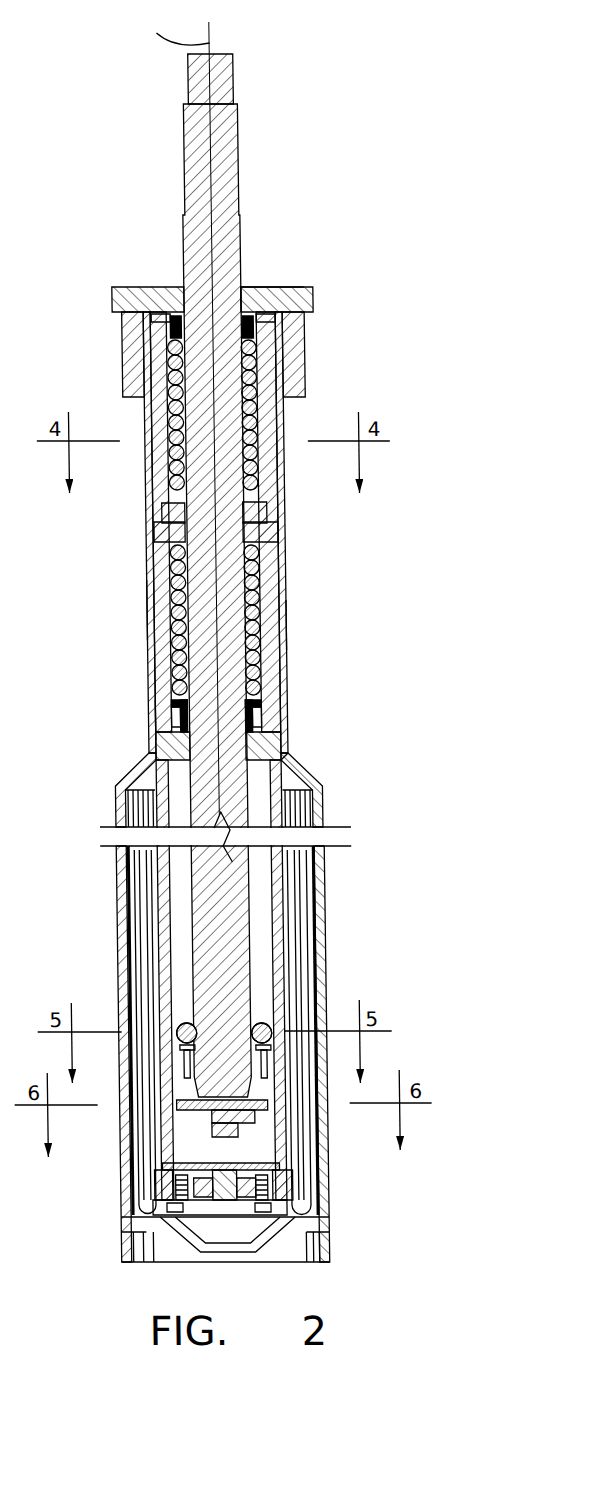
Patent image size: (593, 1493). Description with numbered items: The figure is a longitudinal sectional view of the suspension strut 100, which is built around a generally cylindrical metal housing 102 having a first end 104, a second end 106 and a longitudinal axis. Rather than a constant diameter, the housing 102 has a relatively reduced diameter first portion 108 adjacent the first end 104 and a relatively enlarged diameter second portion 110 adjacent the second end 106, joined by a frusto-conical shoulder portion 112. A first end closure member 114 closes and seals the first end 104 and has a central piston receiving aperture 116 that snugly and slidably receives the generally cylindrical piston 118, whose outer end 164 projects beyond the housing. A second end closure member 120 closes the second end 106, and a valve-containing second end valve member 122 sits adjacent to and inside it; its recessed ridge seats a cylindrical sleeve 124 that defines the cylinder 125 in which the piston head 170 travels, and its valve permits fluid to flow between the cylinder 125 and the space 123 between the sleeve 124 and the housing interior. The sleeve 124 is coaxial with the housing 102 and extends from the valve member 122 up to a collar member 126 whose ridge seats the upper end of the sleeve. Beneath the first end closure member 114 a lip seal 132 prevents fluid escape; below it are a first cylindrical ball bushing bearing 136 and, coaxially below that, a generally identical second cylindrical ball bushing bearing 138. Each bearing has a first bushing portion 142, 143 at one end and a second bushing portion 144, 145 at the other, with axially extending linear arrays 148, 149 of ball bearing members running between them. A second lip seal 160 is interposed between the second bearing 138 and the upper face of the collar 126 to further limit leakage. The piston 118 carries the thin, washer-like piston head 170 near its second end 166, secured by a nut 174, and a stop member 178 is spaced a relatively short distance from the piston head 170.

The suspension strut 100 is at (319, 100).
The housing 102 is at (312, 573).
The first end 104 is at (331, 320).
The second end 106 is at (328, 1262).
The first portion 108 is at (304, 633).
The second portion 110 is at (312, 947).
The shoulder portion 112 is at (305, 770).
The first end closure member 114 is at (266, 287).
The piston receiving aperture 116 is at (241, 285).
The piston 118 is at (245, 172).
The second end closure member 120 is at (266, 1237).
The second end valve member 122 is at (271, 1175).
The space 123 is at (285, 923).
The cylindrical sleeve 124 is at (271, 885).
The cylinder 125 is at (167, 803).
The collar member 126 is at (276, 733).
The lip seal 132 is at (138, 318).
The first cylindrical ball bushing bearing 136 is at (144, 483).
The second cylindrical ball bushing bearing 138 is at (139, 612).
The first bushing portion 142 is at (300, 350).
The first bushing portion 143 is at (278, 530).
The second bushing portion 144 is at (278, 508).
The second bushing portion 145 is at (276, 715).
The array of ball bearing members 148 is at (280, 405).
The array of ball bearing members 149 is at (277, 597).
The second lip seal 160 is at (140, 720).
The rod end 164 is at (234, 75).
The second end of the piston 166 is at (169, 1163).
The piston head 170 is at (157, 1097).
The nut 174 is at (180, 1122).
The stop member 178 is at (163, 1030).